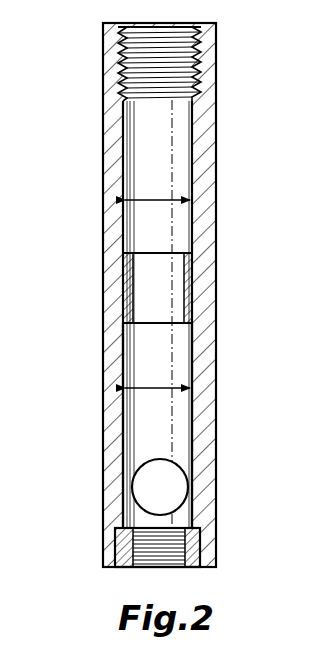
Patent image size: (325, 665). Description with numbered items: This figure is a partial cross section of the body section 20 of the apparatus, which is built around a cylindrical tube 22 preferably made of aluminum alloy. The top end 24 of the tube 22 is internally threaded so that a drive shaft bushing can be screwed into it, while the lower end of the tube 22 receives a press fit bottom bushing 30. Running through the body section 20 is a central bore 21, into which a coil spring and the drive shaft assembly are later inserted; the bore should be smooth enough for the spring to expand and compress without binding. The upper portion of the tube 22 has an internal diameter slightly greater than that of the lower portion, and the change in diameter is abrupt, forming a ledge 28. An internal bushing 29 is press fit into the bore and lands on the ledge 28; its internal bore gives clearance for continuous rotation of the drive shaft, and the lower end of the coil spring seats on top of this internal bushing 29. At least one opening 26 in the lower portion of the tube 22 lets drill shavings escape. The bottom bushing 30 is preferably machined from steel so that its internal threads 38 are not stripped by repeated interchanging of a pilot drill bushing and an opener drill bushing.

The body section 20 is at (163, 311).
The central bore 21 is at (168, 164).
The cylindrical tube 22 is at (108, 202).
The top end 24 is at (110, 45).
The opening 26 is at (184, 460).
The ledge 28 is at (127, 328).
The internal bushing 29 is at (205, 277).
The bottom bushing 30 is at (164, 566).
The internal threads 38 is at (117, 545).